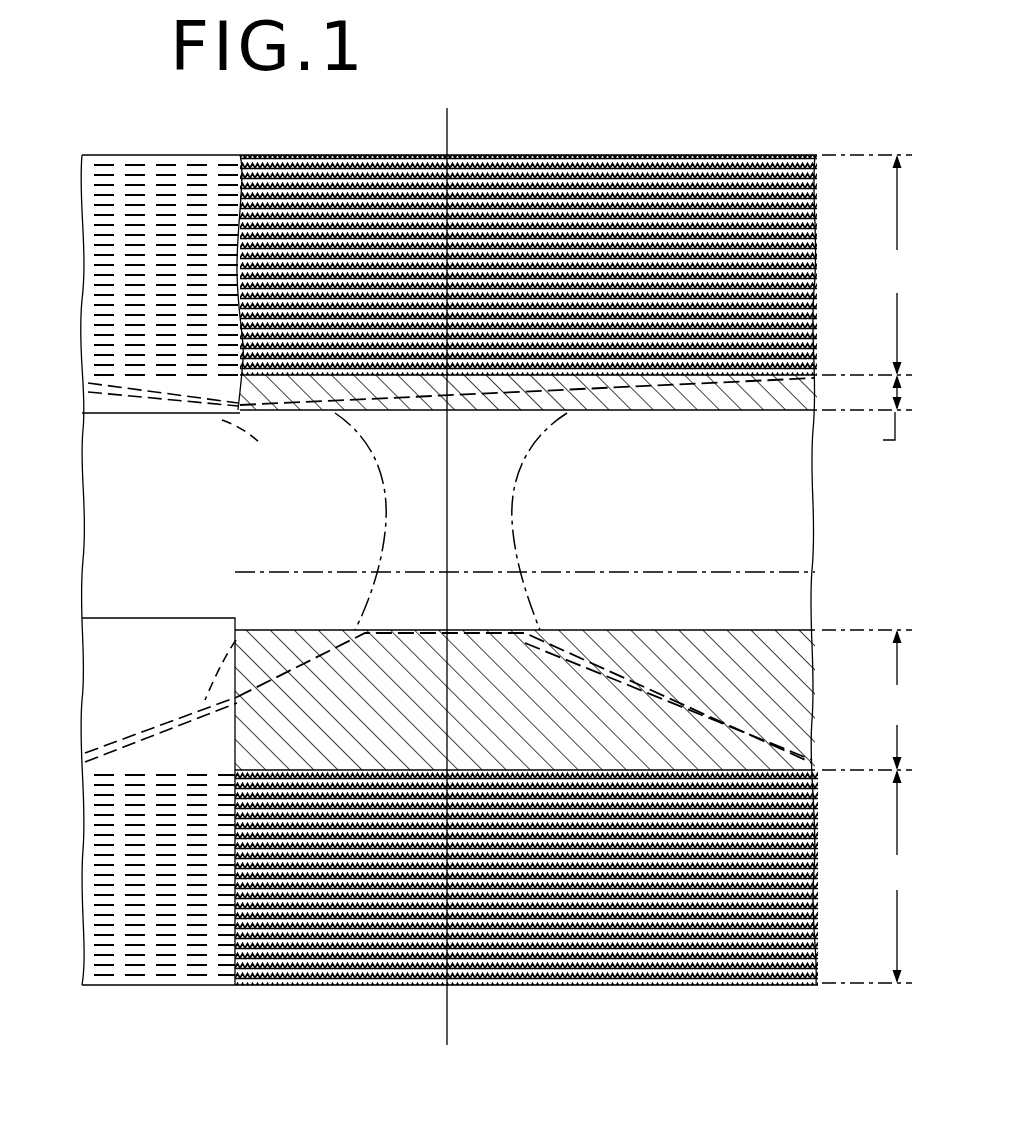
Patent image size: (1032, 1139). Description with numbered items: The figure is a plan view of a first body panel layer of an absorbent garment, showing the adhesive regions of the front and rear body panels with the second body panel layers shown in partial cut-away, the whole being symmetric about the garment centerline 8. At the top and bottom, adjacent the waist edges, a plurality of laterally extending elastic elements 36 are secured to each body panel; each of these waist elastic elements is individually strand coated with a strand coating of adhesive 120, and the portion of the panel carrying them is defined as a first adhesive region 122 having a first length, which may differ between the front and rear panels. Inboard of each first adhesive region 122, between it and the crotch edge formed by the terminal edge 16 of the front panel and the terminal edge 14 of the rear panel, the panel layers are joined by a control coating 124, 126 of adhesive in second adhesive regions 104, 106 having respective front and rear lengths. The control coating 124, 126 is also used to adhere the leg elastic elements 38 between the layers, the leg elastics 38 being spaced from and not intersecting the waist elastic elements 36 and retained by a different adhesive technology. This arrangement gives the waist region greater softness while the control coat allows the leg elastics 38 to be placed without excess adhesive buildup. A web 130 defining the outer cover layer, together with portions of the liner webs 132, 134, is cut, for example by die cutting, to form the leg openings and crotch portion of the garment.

The centerline 8 is at (447, 126).
The terminal edge 14 is at (163, 618).
The terminal edge 16 is at (185, 413).
The laterally extending elastic elements 36 is at (593, 955).
The leg elastic elements 38 is at (240, 630).
The second adhesive region 104 is at (712, 410).
The second adhesive region 106 is at (695, 652).
The strand coating of adhesive 120 is at (622, 955).
The first adhesive region 122 is at (707, 235).
The control coating 124 is at (598, 400).
The control coating 126 is at (632, 650).
The web 130 is at (780, 538).
The liner web 132 is at (100, 393).
The liner web 134 is at (120, 667).